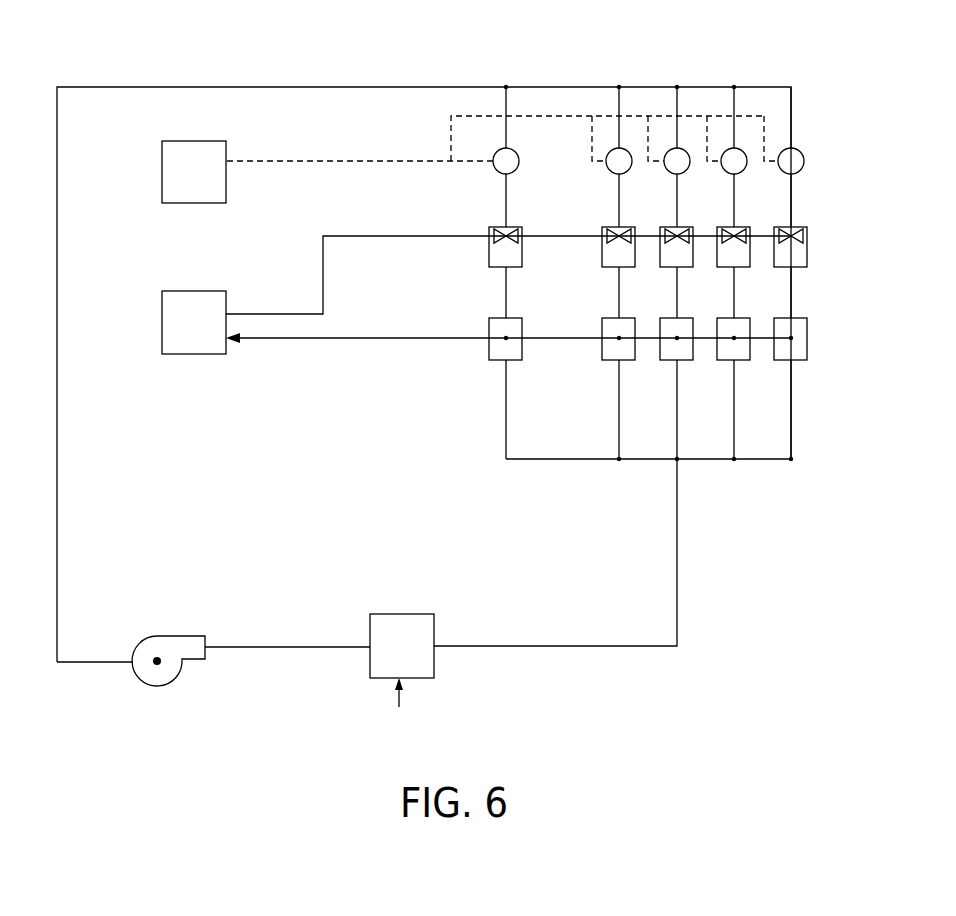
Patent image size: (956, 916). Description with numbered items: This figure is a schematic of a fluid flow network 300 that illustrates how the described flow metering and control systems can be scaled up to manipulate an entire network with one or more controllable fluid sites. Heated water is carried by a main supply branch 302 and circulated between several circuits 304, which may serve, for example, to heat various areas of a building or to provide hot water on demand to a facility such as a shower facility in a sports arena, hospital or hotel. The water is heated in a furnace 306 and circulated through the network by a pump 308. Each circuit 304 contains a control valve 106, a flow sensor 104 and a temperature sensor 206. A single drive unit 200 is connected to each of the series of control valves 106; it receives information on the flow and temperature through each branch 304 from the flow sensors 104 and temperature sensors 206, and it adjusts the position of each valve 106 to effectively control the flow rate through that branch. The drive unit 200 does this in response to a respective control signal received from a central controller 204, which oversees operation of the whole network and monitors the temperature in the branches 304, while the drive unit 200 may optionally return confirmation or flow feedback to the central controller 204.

The flow network 300 is at (230, 62).
The central controller 204 is at (227, 157).
The drive unit 200 is at (232, 295).
The temperature sensor 206 is at (514, 172).
The control valve 106 is at (489, 262).
The flow sensor 104 is at (514, 362).
The circuit 304 is at (506, 443).
The main supply branch 302 is at (518, 645).
The furnace 306 is at (434, 625).
The pump 308 is at (165, 686).